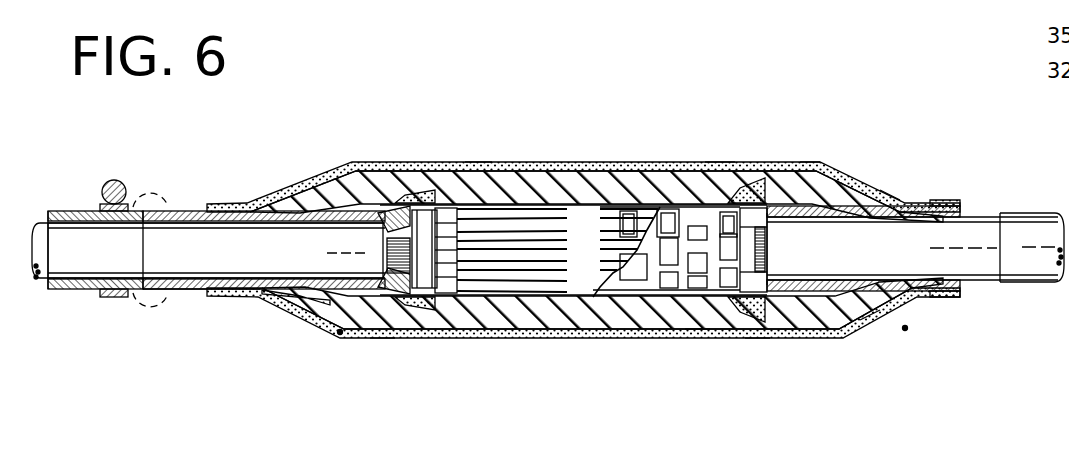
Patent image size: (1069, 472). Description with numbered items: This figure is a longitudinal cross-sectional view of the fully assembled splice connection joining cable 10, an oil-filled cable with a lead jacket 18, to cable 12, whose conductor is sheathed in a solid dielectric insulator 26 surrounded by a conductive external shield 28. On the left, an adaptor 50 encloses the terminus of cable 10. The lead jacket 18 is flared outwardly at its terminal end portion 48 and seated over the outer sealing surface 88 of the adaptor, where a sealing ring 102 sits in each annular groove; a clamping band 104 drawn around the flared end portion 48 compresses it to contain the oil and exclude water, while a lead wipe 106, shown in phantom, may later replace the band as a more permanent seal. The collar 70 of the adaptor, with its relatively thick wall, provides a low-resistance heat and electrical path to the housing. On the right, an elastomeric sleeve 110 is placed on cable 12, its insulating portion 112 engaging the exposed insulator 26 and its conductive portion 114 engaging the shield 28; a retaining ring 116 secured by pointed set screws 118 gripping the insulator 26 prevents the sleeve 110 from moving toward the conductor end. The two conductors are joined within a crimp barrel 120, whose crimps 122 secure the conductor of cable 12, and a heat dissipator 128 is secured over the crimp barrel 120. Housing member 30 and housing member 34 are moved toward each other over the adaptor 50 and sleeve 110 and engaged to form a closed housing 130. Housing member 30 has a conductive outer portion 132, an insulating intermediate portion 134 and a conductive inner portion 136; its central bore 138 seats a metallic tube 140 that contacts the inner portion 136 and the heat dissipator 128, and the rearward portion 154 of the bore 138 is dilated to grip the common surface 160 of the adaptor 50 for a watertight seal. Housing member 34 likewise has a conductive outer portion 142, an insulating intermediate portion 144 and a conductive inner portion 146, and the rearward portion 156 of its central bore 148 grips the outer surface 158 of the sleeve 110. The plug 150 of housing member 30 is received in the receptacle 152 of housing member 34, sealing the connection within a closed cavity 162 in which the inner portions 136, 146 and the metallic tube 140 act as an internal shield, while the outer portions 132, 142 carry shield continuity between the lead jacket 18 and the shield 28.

The cable 10 is at (47, 202).
The cable 12 is at (1047, 288).
The lead jacket 18 is at (46, 290).
The insulator 26 is at (962, 233).
The external shield 28 is at (1045, 227).
The housing member 30 is at (362, 154).
The housing member 34 is at (808, 165).
The terminal end portion 48 is at (82, 208).
The adaptor 50 is at (182, 310).
The collar 70 is at (408, 167).
The outer sealing surface 88 is at (143, 211).
The sealing ring 102 is at (118, 283).
The clamping band 104 is at (117, 298).
The lead wipe 106 is at (168, 196).
The sleeve 110 is at (870, 312).
The insulating portion 112 is at (913, 287).
The conductive portion 114 is at (1008, 210).
The retaining ring 116 is at (782, 322).
The set screws 118 is at (775, 222).
The crimp barrel 120 is at (762, 163).
The crimps 122 is at (693, 225).
The heat dissipator 128 is at (577, 300).
The housing 130 is at (540, 154).
The conductive outer portion 132 is at (383, 333).
The insulating intermediate portion 134 is at (477, 162).
The conductive inner portion 136 is at (418, 328).
The central bore 138 is at (290, 222).
The metallic tube 140 is at (614, 300).
The conductive outer portion 142 is at (722, 163).
The insulating intermediate portion 144 is at (757, 320).
The conductive inner portion 146 is at (698, 327).
The central bore 148 is at (830, 265).
The plug 150 is at (623, 177).
The receptacle 152 is at (598, 190).
The rearward portion 154 is at (265, 300).
The rearward portion 156 is at (869, 222).
The outer surface 158 is at (887, 190).
The common surface 160 is at (299, 193).
The closed cavity 162 is at (474, 298).